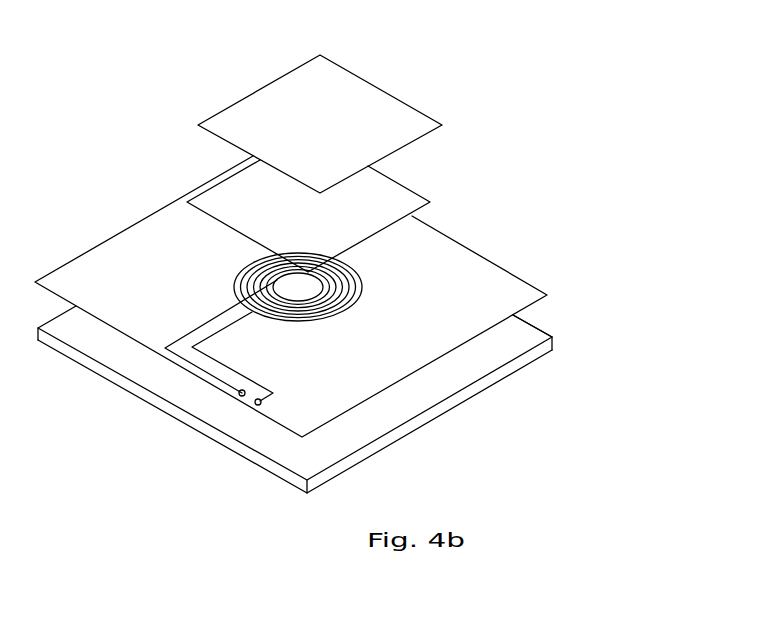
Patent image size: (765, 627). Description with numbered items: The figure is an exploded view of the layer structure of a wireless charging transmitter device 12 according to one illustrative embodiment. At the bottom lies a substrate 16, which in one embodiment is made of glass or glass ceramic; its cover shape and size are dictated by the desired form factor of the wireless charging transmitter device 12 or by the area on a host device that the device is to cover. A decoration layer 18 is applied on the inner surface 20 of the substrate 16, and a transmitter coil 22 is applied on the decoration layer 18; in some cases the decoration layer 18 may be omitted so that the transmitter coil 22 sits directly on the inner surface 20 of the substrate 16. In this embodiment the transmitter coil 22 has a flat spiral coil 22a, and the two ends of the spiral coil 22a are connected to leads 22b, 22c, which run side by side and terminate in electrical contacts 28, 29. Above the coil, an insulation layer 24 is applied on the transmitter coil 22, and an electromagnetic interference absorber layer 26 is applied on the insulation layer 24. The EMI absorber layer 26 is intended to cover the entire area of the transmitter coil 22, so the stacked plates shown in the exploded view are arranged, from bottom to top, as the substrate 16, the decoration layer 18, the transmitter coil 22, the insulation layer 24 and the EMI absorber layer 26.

The wireless charging transmitter device 12 is at (241, 80).
The substrate 16 is at (305, 399).
The decoration layer 18 is at (478, 258).
The inner surface 20 is at (538, 335).
The transmitter coil 22 is at (276, 317).
The flat spiral coil 22a is at (358, 299).
The lead 22b is at (200, 327).
The lead 22c is at (227, 323).
The insulation layer 24 is at (407, 192).
The electromagnetic interference absorber layer 26 is at (383, 98).
The electrical contact 28 is at (243, 389).
The electrical contact 29 is at (263, 390).